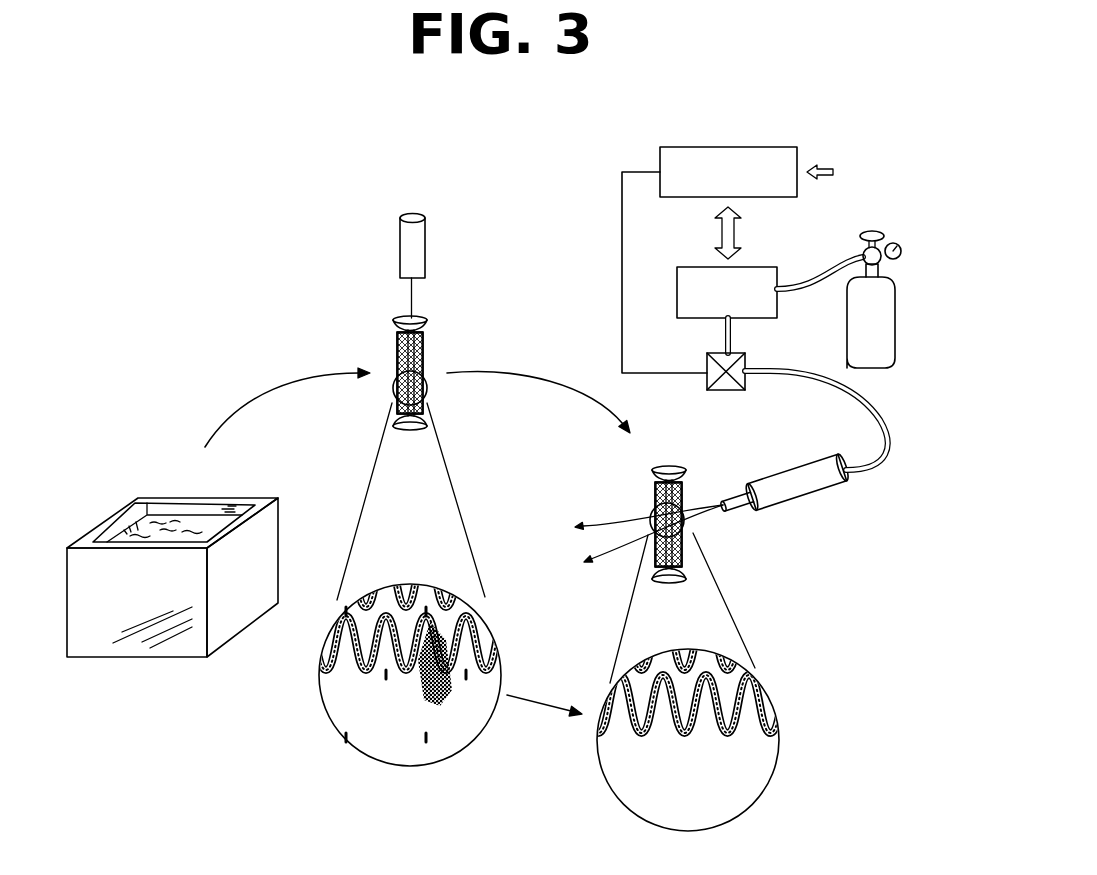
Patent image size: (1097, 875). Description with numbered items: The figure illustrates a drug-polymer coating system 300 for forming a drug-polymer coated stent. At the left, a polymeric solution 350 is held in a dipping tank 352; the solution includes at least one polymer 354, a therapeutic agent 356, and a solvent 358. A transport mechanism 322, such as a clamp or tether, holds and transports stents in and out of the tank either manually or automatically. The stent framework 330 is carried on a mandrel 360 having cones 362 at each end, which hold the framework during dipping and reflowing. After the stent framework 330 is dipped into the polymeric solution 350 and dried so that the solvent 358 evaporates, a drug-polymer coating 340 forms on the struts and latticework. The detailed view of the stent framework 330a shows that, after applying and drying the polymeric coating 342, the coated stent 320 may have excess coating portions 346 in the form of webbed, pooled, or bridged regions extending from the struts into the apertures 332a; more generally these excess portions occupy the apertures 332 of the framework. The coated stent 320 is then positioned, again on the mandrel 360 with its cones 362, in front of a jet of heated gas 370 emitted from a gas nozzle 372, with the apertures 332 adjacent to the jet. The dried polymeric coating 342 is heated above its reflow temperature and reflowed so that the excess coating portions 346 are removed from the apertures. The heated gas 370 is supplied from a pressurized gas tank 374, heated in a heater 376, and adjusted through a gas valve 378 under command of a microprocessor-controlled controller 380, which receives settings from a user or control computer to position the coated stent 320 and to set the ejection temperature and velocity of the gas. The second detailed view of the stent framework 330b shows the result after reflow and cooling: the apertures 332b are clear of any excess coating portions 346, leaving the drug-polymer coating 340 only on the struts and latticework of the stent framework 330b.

The drug-polymer coating system 300 is at (184, 197).
The coated stent 320 is at (373, 335).
The transport mechanism 322 is at (426, 244).
The stent framework 330 is at (422, 346).
The stent framework 330a is at (342, 692).
The stent framework 330b is at (655, 515).
The apertures 332 is at (425, 355).
The apertures 332a is at (433, 693).
The apertures 332b is at (705, 757).
The drug-polymer coating 340 is at (425, 364).
The polymeric coating 342 is at (425, 368).
The excess coating portions 346 is at (400, 677).
The polymeric solution 350 is at (208, 512).
The dipping tank 352 is at (168, 496).
The polymer 354 is at (137, 530).
The therapeutic agent 356 is at (131, 532).
The solvent 358 is at (127, 534).
The mandrel 360 is at (423, 338).
The cones 362 is at (420, 322).
The jet of heated gas 370 is at (705, 512).
The gas nozzle 372 is at (728, 510).
The pressurized gas tank 374 is at (881, 288).
The heater 376 is at (757, 267).
The gas valve 378 is at (740, 353).
The controller 380 is at (778, 147).